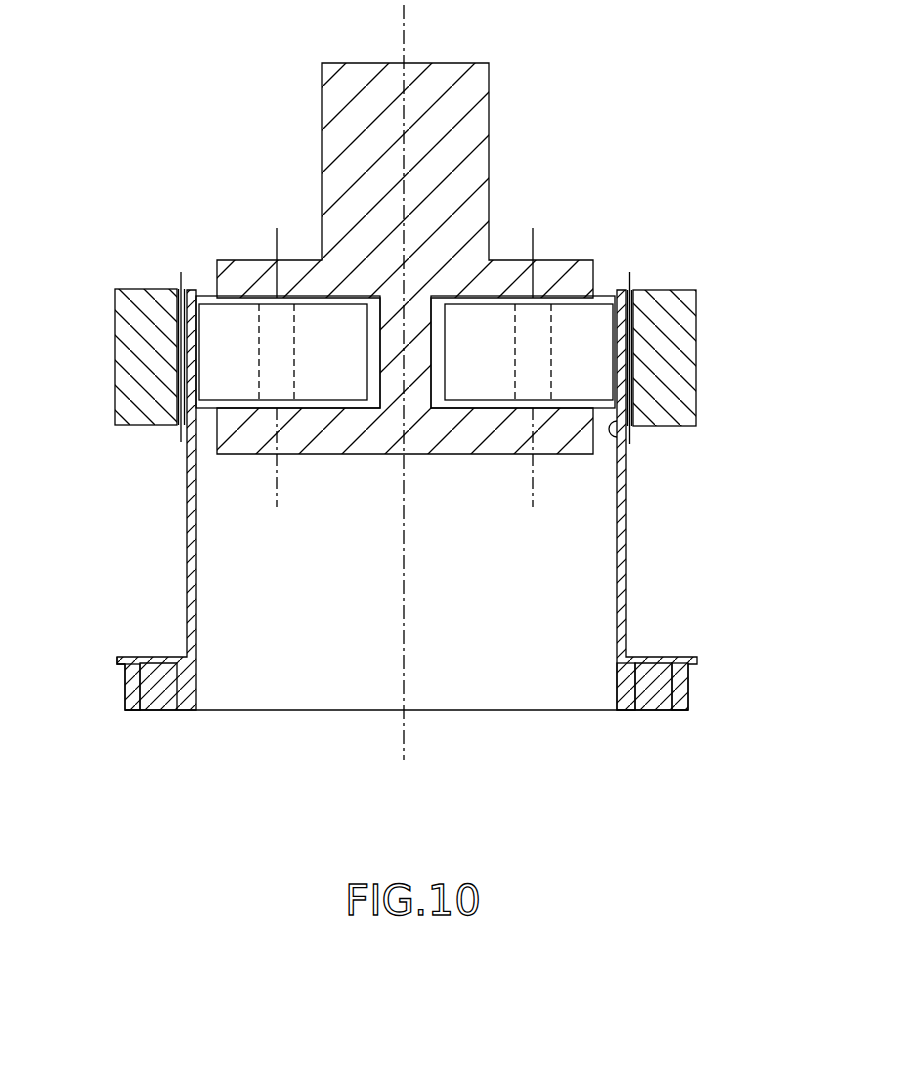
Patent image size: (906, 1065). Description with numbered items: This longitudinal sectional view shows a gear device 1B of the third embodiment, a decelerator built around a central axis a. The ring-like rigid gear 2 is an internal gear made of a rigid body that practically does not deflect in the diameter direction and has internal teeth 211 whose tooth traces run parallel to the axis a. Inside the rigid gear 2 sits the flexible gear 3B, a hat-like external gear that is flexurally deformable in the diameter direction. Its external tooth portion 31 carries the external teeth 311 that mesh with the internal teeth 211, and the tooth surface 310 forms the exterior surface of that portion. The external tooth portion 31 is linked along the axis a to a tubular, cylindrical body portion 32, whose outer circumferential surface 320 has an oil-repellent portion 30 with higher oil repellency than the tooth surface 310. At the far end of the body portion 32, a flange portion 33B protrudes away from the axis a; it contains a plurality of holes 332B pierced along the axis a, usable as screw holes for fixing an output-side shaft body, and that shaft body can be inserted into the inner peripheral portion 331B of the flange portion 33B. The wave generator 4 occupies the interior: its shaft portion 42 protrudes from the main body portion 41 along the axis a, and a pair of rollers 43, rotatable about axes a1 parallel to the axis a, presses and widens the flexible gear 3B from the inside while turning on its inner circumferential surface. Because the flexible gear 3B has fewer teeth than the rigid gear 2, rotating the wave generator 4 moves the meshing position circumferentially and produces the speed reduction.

The gear device 1B is at (656, 172).
The axis a is at (403, 42).
The wave generator 4 is at (497, 165).
The main body portion 41 is at (437, 456).
The shaft portion 42 is at (322, 145).
The rollers 43 is at (345, 410).
The axes a1 is at (275, 497).
The rigid gear 2 is at (709, 404).
The flexible gear 3B is at (640, 577).
The body portion 32 is at (187, 535).
The oil-repellent portion 30 is at (148, 500).
The outer circumferential surface 320 is at (627, 520).
The flange portion 33B is at (116, 661).
The inner peripheral portion 331B is at (617, 690).
The holes 332B is at (140, 682).
The external tooth portion 31 is at (178, 413).
The tooth surface 310 is at (630, 355).
The external teeth 311 is at (650, 305).
The internal teeth 211 is at (618, 440).